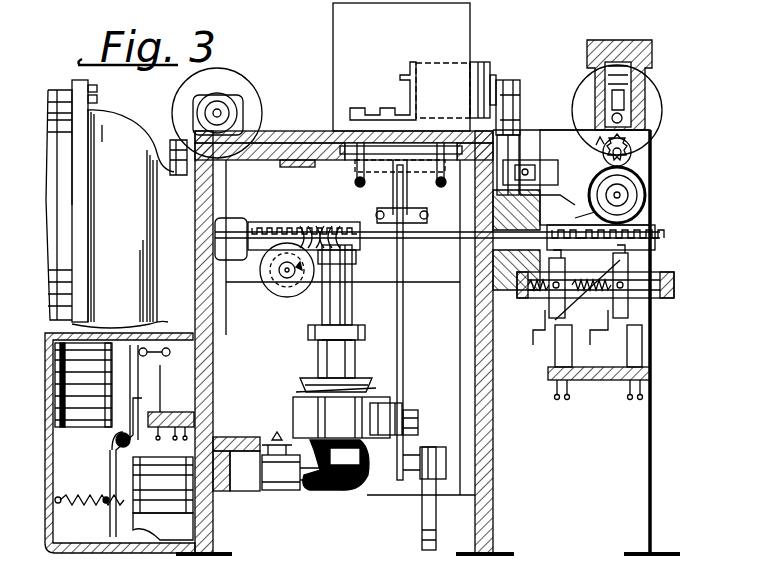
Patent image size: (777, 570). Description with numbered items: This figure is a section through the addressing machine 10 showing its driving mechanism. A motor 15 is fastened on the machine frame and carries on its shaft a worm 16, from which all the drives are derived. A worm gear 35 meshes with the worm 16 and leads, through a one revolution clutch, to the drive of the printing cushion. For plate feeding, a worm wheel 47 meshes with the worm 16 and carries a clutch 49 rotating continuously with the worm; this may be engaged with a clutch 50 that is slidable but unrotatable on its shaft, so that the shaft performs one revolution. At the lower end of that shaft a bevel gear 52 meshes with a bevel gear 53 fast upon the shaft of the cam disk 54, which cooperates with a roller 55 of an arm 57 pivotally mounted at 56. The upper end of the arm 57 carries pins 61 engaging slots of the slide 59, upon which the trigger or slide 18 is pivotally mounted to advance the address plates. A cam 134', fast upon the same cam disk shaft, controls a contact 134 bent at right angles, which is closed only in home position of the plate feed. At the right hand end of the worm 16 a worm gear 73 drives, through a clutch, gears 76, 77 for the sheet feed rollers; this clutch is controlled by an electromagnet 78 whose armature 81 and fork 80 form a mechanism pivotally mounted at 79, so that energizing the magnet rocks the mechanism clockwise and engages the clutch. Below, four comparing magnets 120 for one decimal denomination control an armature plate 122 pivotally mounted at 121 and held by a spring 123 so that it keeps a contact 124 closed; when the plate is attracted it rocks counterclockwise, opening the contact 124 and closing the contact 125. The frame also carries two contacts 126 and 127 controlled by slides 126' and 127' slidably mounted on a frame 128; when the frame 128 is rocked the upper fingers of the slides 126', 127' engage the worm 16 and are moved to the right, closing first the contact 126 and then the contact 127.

The housing 10 is at (333, 68).
The motor 15 is at (130, 123).
The worm 16 is at (455, 240).
The slide 18 is at (356, 164).
The worm gear 35 is at (278, 286).
The worm wheel 47 is at (322, 222).
The clutch 49 is at (358, 333).
The clutch 50 is at (366, 378).
The bevel gear 52 is at (326, 440).
The bevel gear 53 is at (352, 490).
The cam disk 54 is at (424, 520).
The roller 55 is at (437, 452).
The pivot 56 is at (419, 426).
The arm 57 is at (404, 296).
The slide 59 is at (380, 193).
The pins 61 is at (426, 212).
The worm gear 73 is at (646, 204).
The gear 76 is at (636, 160).
The gear 77 is at (628, 136).
The electromagnet 78 is at (483, 63).
The pivot of clutch mechanism 79 is at (520, 170).
The fork 80 is at (600, 160).
The armature 81 is at (521, 90).
The comparing magnets 120 is at (88, 425).
The pivot 121 is at (131, 442).
The armature plate 122 is at (110, 515).
The spring 123 is at (78, 495).
The contact 124 is at (166, 350).
The contact 125 is at (166, 383).
The contact 126 is at (575, 362).
The slide 126' is at (532, 305).
The contact 127 is at (658, 362).
The slide 127' is at (624, 295).
The frame 128 is at (654, 272).
The contact 134 is at (273, 433).
The cam 134' is at (301, 494).